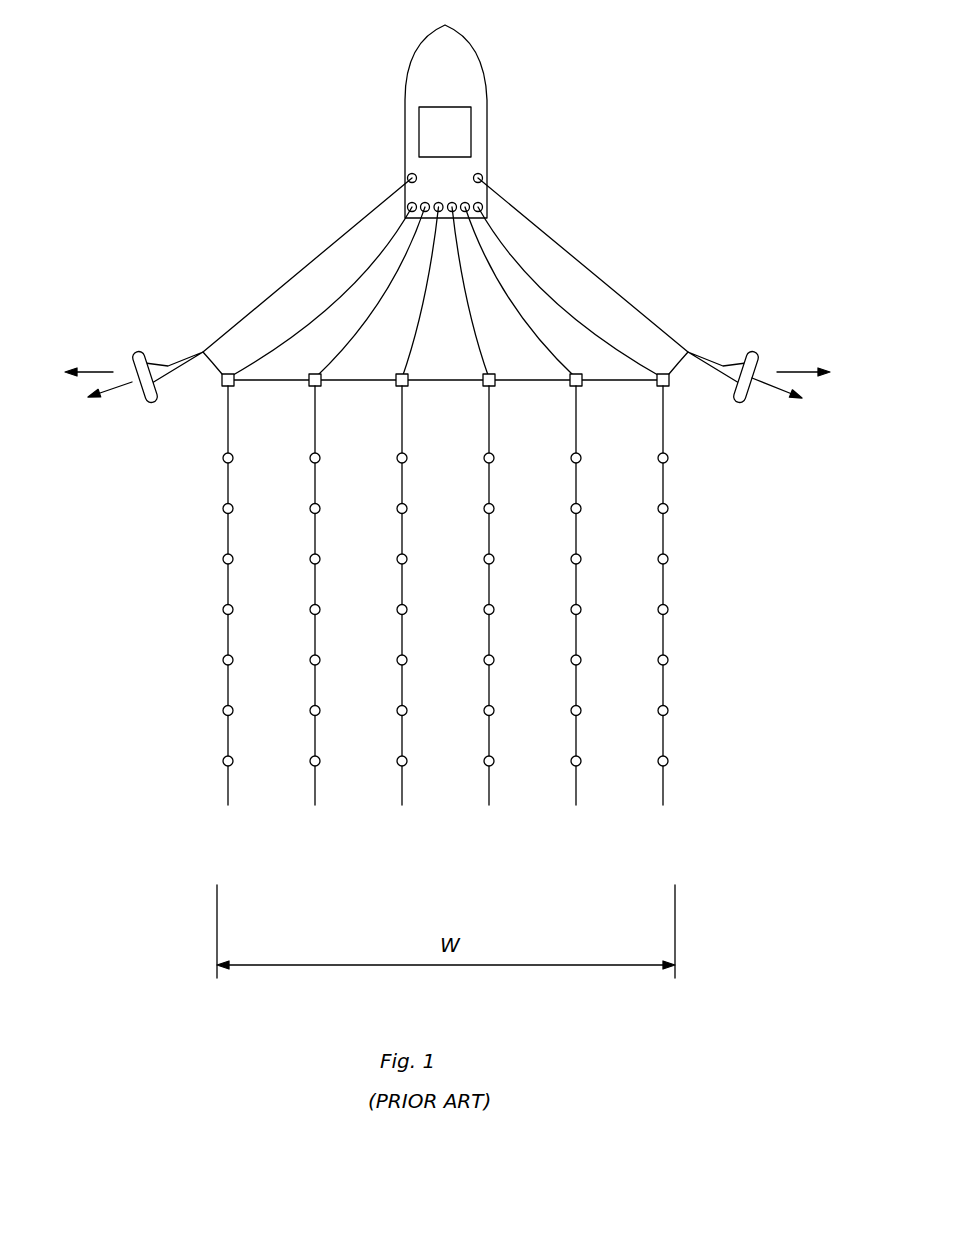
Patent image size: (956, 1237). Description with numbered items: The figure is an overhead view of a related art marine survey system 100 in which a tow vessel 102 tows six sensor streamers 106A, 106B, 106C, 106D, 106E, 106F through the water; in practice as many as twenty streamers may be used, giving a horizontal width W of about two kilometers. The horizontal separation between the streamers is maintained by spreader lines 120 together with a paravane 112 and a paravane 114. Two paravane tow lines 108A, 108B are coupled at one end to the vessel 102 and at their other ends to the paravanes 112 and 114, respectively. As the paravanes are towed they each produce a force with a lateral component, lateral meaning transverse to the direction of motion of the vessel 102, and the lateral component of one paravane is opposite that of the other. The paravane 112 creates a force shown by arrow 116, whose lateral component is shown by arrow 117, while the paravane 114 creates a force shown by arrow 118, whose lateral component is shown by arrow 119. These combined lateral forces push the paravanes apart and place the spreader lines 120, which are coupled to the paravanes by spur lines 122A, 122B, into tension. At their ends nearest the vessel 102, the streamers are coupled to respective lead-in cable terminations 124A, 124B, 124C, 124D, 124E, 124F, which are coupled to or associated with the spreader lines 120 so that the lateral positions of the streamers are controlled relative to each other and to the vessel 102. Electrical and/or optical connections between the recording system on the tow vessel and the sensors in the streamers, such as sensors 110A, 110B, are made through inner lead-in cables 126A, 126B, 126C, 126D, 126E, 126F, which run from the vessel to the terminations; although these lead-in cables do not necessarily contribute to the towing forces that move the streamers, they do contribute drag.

The marine survey system 100 is at (197, 68).
The tow vessel 102 is at (409, 70).
The sensor streamer 106A is at (186, 611).
The sensor streamer 106B is at (314, 787).
The sensor streamer 106C is at (401, 787).
The sensor streamer 106D is at (490, 787).
The sensor streamer 106E is at (577, 787).
The sensor streamer 106F is at (664, 787).
The paravane tow line 108A is at (372, 209).
The paravane tow line 108B is at (519, 209).
The sensor 110A is at (223, 460).
The sensor 110B is at (223, 511).
The paravane 112 is at (140, 349).
The paravane 114 is at (751, 349).
The force arrow 116 is at (105, 392).
The lateral force component arrow 117 is at (93, 371).
The force arrow 118 is at (778, 392).
The lateral force component arrow 119 is at (797, 371).
The spreader line 120 is at (431, 384).
The spur line 122A is at (212, 366).
The spur line 122B is at (679, 366).
The lead-in cable termination 124A is at (222, 388).
The lead-in cable termination 124B is at (309, 388).
The lead-in cable termination 124C is at (396, 388).
The lead-in cable termination 124D is at (495, 388).
The lead-in cable termination 124E is at (582, 388).
The lead-in cable termination 124F is at (669, 388).
The inner lead-in cable 126A is at (382, 249).
The inner lead-in cable 126B is at (388, 285).
The inner lead-in cable 126C is at (411, 343).
The inner lead-in cable 126D is at (480, 343).
The inner lead-in cable 126E is at (504, 285).
The inner lead-in cable 126F is at (509, 249).